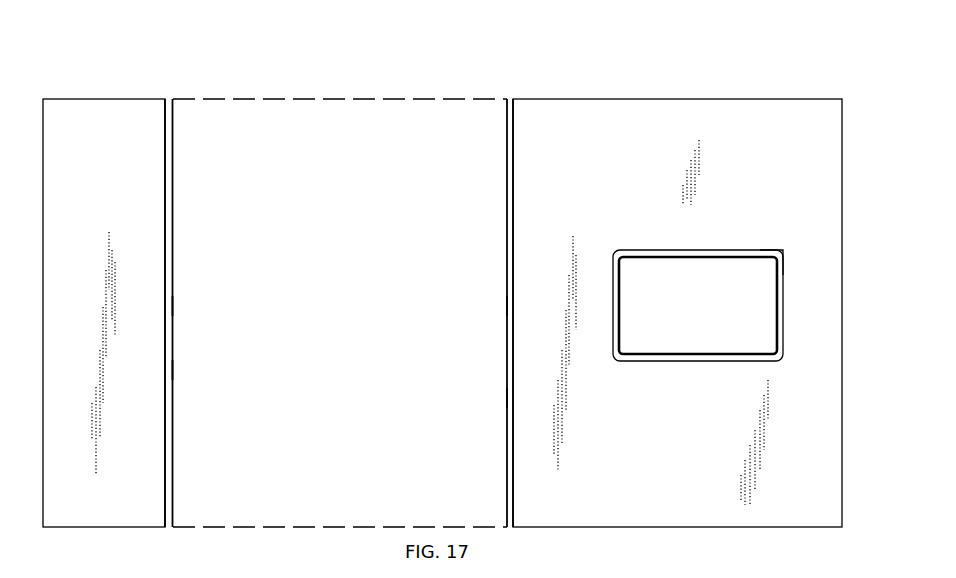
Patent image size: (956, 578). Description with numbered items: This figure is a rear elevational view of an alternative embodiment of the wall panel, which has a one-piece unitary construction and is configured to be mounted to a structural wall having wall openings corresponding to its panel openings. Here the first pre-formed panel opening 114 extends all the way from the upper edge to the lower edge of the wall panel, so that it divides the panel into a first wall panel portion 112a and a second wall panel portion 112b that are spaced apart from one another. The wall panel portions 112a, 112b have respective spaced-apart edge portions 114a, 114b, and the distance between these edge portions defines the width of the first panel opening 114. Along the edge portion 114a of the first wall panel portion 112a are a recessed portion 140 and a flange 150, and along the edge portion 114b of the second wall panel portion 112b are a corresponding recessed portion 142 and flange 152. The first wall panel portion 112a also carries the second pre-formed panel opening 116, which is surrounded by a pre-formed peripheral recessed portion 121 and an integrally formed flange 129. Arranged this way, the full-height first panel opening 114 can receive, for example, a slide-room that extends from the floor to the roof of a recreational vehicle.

The second wall panel portion 112b is at (89, 99).
The first pre-formed panel opening 114 is at (322, 145).
The first wall panel portion 112a is at (585, 99).
The recessed portion 142 is at (165, 213).
The flange 152 is at (172, 307).
The edge portion 114b is at (172, 370).
The recessed portion 140 is at (515, 201).
The flange 150 is at (508, 307).
The edge portion 114a is at (508, 399).
The second pre-formed panel opening 116 is at (733, 252).
The flange 129 is at (641, 257).
The peripheral recessed portion 121 is at (773, 252).